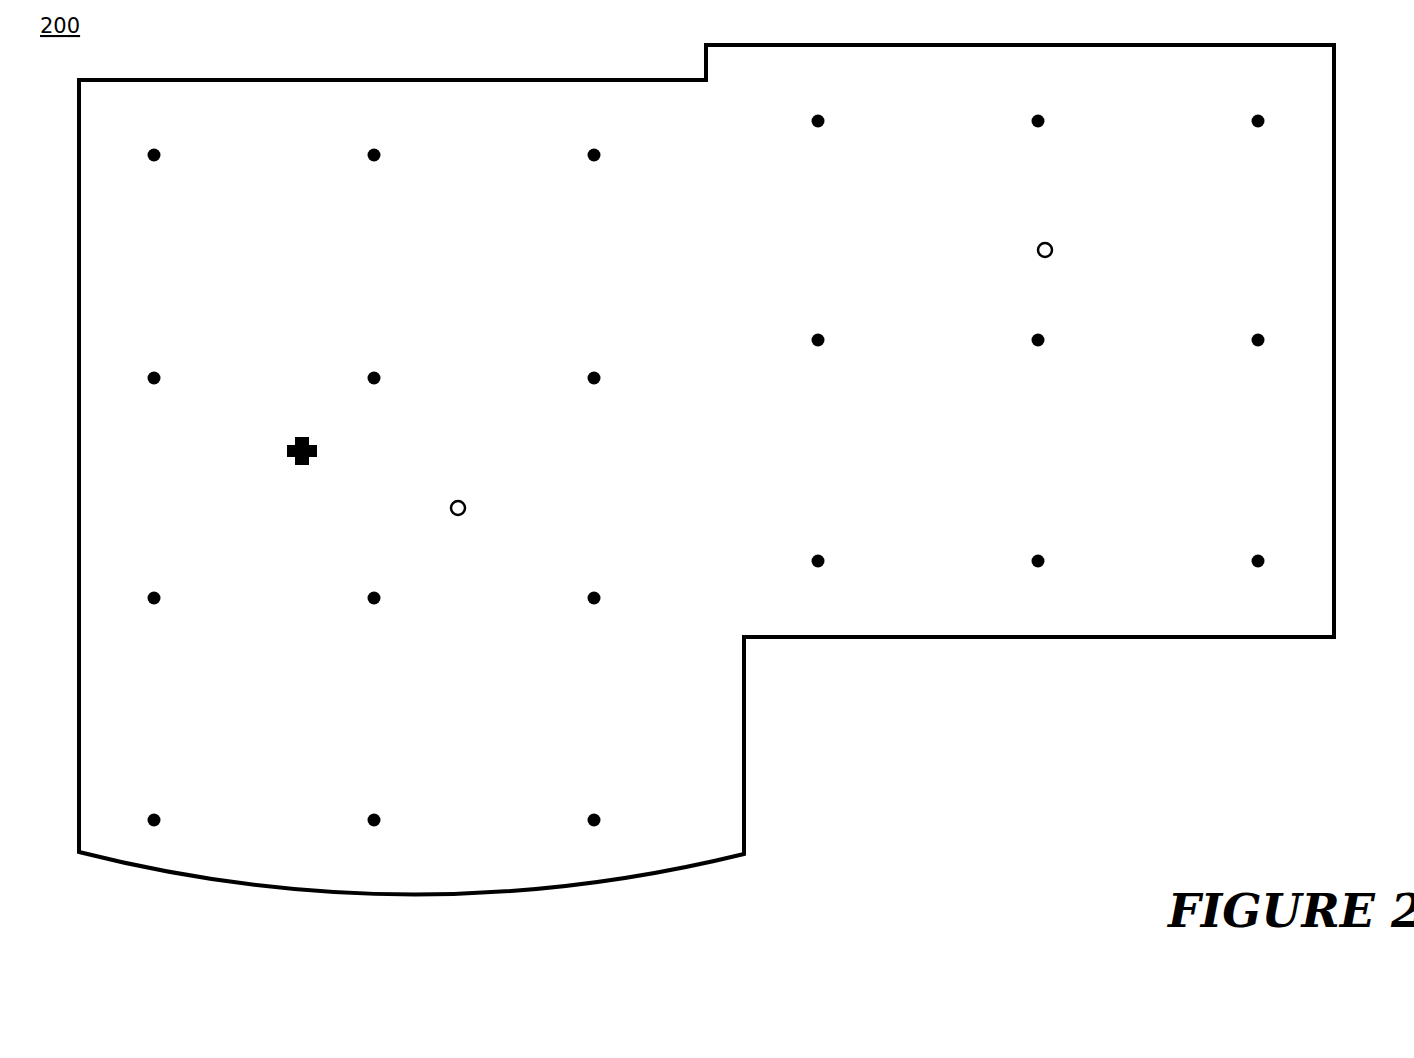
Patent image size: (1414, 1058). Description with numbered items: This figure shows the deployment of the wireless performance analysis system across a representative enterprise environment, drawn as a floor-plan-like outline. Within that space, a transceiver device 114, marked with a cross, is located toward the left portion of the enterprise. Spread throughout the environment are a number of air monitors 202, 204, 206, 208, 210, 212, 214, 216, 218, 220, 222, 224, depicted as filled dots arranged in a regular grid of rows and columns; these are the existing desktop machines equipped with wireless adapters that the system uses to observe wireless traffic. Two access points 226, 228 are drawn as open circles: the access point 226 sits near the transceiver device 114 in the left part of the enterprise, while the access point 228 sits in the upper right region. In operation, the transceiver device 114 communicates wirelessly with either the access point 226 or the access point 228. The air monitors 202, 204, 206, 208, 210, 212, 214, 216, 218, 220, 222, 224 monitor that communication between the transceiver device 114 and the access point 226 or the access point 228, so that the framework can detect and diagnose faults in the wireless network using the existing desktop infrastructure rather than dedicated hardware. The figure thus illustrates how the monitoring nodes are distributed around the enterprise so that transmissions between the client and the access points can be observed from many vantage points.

The transceiver device 114 is at (301, 465).
The air monitor 202 is at (154, 135).
The air monitor 204 is at (374, 135).
The air monitor 206 is at (594, 135).
The air monitor 208 is at (154, 358).
The air monitor 210 is at (374, 358).
The air monitor 212 is at (594, 358).
The air monitor 214 is at (154, 618).
The air monitor 216 is at (374, 618).
The air monitor 218 is at (594, 618).
The air monitor 220 is at (154, 800).
The air monitor 222 is at (374, 800).
The air monitor 224 is at (594, 800).
The access point 226 is at (458, 488).
The access point 228 is at (1045, 230).